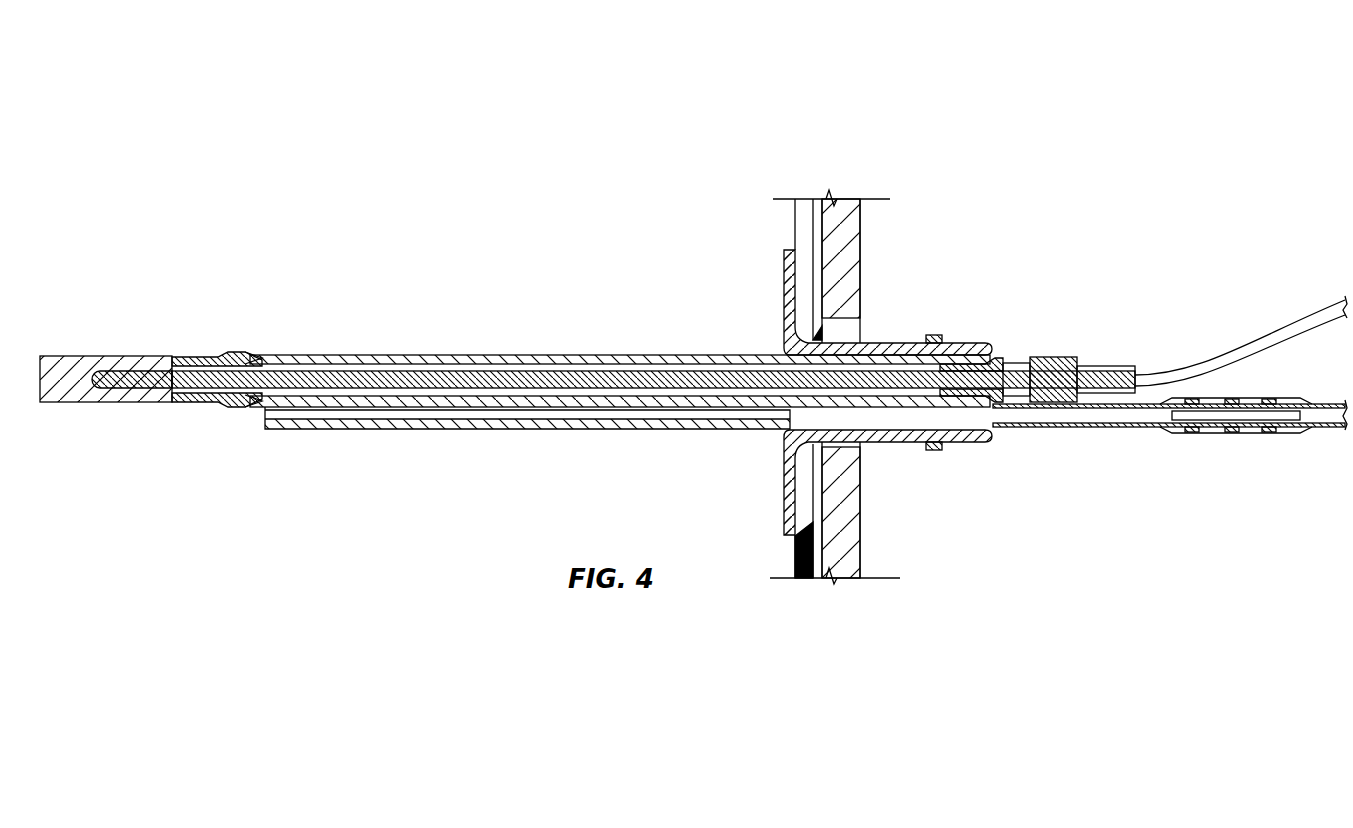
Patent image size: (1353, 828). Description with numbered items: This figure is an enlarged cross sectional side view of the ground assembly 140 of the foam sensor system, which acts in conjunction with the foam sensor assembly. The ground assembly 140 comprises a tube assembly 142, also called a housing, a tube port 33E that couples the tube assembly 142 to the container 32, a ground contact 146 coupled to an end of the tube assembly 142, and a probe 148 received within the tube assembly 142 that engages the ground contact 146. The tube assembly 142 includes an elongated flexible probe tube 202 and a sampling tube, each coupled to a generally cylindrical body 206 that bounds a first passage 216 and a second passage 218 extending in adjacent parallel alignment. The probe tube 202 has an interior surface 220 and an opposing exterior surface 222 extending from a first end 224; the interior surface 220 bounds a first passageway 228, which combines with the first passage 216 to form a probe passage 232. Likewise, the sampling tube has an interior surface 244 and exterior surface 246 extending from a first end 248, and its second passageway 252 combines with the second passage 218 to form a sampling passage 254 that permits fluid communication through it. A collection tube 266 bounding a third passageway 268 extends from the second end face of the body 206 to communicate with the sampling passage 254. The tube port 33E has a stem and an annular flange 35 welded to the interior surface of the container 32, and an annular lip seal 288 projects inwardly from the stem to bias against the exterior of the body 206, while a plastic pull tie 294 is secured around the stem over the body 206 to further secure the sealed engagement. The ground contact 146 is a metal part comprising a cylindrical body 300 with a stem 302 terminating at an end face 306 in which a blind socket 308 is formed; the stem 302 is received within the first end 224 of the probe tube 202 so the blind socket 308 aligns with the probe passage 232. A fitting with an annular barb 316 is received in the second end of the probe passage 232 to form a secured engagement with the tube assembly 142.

The ground assembly 140 is at (766, 144).
The container 32 is at (797, 217).
The annular flange 35 is at (785, 273).
The tube port 33E is at (887, 341).
The first passage 216 is at (912, 343).
The plastic pull tie 294 is at (941, 336).
The first end 224 is at (233, 334).
The ground contact 146 is at (86, 362).
The blind socket 308 is at (149, 362).
The end face 306 is at (274, 360).
The probe 148 is at (344, 362).
The first passageway 228 is at (528, 365).
The probe tube 202 is at (432, 361).
The tube assembly 142 is at (558, 362).
The exterior surface 222 is at (593, 358).
The interior surface 220 is at (650, 372).
The probe passage 232 is at (688, 368).
The cylindrical body 300 is at (62, 403).
The stem 302 is at (191, 403).
The first end 248 is at (273, 436).
The exterior surface 246 is at (324, 430).
The interior surface 244 is at (426, 412).
The second passageway 252 is at (483, 415).
The sampling passage 254 is at (600, 413).
The annular lip seal 288 is at (778, 441).
The body 206 is at (912, 432).
The second passage 218 is at (962, 413).
The annular barb 316 is at (1027, 397).
The third passageway 268 is at (1148, 413).
The collection tube 266 is at (1110, 424).